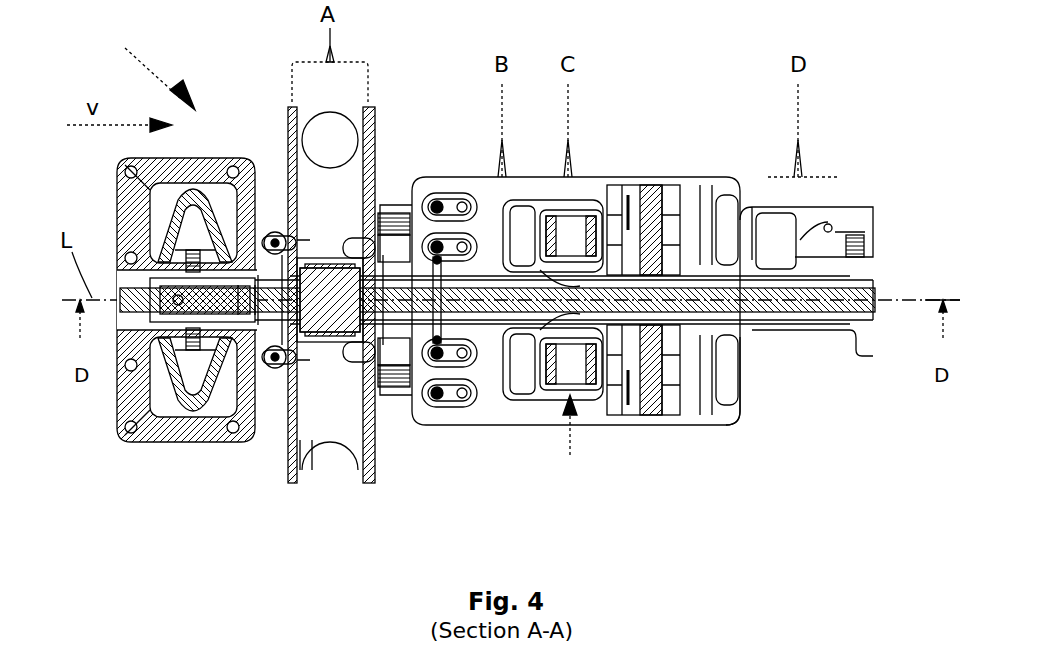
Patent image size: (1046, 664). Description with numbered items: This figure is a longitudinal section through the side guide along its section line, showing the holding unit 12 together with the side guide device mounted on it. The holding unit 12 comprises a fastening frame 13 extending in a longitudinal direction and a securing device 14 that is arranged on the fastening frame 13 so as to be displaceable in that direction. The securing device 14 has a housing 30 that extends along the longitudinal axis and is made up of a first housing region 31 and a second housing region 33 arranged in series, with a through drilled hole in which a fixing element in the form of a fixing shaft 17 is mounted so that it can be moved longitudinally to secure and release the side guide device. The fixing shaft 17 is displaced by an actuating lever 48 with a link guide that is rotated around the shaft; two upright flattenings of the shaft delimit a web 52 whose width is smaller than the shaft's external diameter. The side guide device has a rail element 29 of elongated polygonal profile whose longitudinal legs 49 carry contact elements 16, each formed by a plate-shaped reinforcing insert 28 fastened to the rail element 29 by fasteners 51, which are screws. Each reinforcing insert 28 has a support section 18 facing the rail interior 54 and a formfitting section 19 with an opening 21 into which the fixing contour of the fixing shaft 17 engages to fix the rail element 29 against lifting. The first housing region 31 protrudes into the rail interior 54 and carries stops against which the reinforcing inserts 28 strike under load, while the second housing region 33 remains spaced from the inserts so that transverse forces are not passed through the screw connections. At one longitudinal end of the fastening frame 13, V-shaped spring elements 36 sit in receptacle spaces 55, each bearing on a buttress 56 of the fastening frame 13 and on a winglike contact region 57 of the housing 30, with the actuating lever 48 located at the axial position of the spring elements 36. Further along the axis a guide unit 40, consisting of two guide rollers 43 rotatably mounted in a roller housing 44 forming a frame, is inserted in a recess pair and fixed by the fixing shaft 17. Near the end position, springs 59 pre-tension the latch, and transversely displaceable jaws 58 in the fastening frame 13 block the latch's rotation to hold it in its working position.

The holding unit 12 is at (143, 66).
The fastening frame 13 is at (185, 445).
The securing device 14 is at (910, 178).
The contact elements 16 is at (288, 150).
The fixing shaft 17 is at (775, 400).
The support section 18 is at (292, 483).
The formfitting section 19 is at (270, 445).
The opening 21 is at (333, 258).
The reinforcing insert 28 is at (268, 230).
The rail element 29 is at (385, 213).
The housing 30 is at (715, 177).
The first housing region 31 is at (325, 440).
The second housing region 33 is at (215, 440).
The spring elements 36 is at (160, 210).
The guide unit 40 is at (570, 440).
The guide rollers 43 is at (583, 177).
The roller housing 44 is at (600, 430).
The actuating lever 48 is at (212, 165).
The longitudinal legs 49 is at (285, 150).
The fasteners 51 is at (268, 232).
The web 52 is at (512, 402).
The rail interior 54 is at (305, 470).
The receptacle space 55 is at (125, 440).
The buttress 56 is at (142, 395).
The winglike contact regions 57 is at (150, 340).
The jaws 58 is at (680, 177).
The springs 59 is at (632, 177).